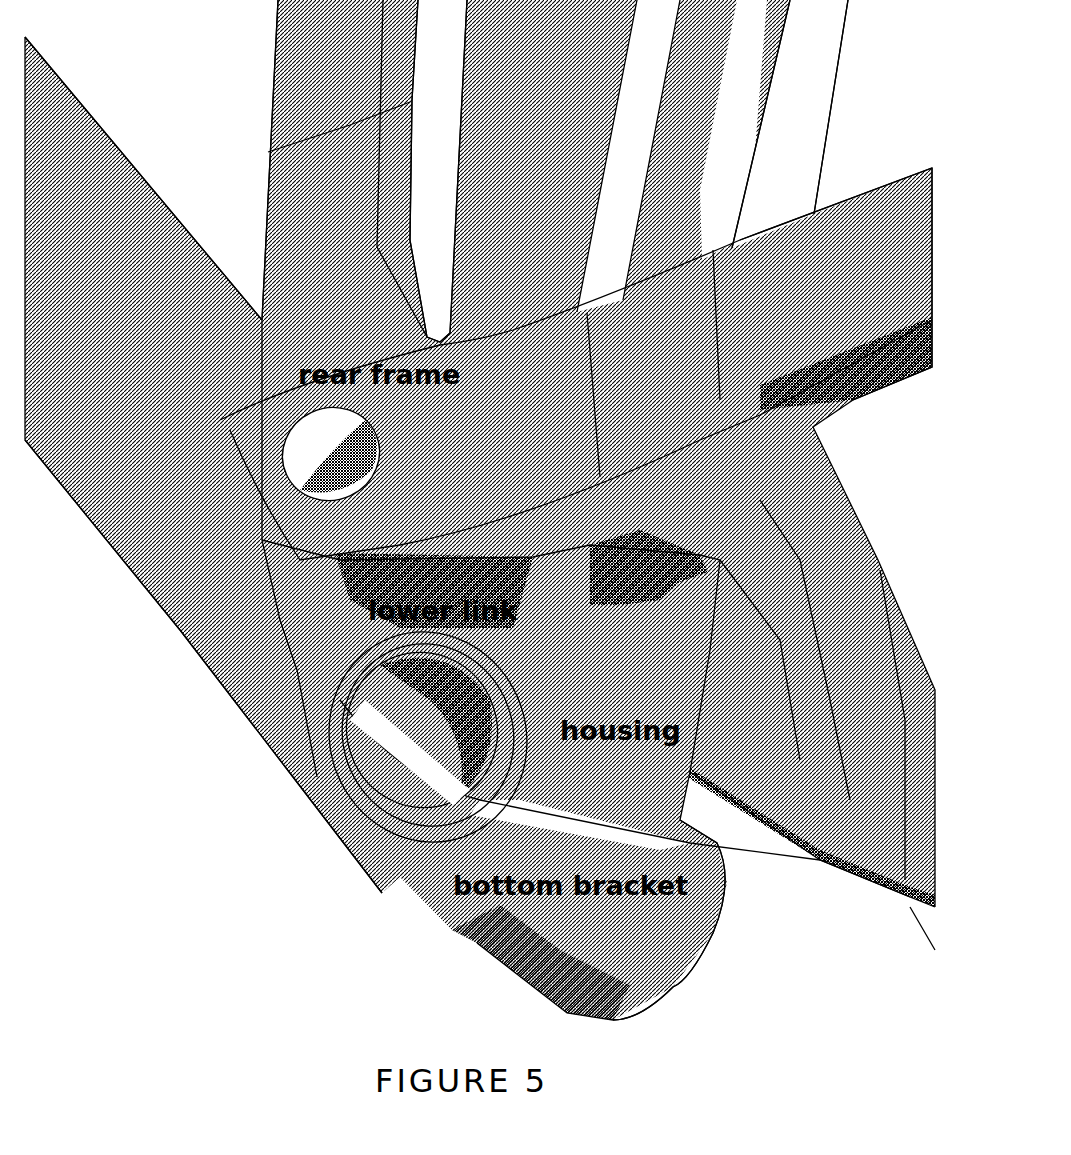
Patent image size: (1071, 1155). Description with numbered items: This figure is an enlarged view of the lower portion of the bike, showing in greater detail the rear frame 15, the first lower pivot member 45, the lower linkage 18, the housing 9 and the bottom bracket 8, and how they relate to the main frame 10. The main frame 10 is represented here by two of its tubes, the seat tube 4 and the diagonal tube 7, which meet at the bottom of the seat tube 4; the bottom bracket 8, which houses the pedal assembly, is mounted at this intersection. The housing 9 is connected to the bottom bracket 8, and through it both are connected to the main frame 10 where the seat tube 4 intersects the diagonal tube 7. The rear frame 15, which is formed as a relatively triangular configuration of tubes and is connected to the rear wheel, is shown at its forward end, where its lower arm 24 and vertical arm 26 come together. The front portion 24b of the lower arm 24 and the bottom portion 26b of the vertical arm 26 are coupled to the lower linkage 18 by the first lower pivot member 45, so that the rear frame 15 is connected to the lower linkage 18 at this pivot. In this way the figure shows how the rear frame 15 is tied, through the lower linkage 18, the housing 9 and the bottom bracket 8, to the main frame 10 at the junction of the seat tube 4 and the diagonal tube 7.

The vertical arm 26 is at (268, 125).
The bottom portion of vertical arm 26b is at (288, 338).
The front portion of lower arm 24b is at (458, 410).
The seat tube 4 is at (730, 130).
The lower arm 24 is at (745, 270).
The rear frame 15 is at (888, 385).
The first lower pivot member 45 is at (240, 523).
The diagonal tube 7 is at (213, 682).
The lower linkage 18 is at (263, 737).
The main frame 10 is at (280, 835).
The housing 9 is at (690, 812).
The bottom bracket 8 is at (680, 990).